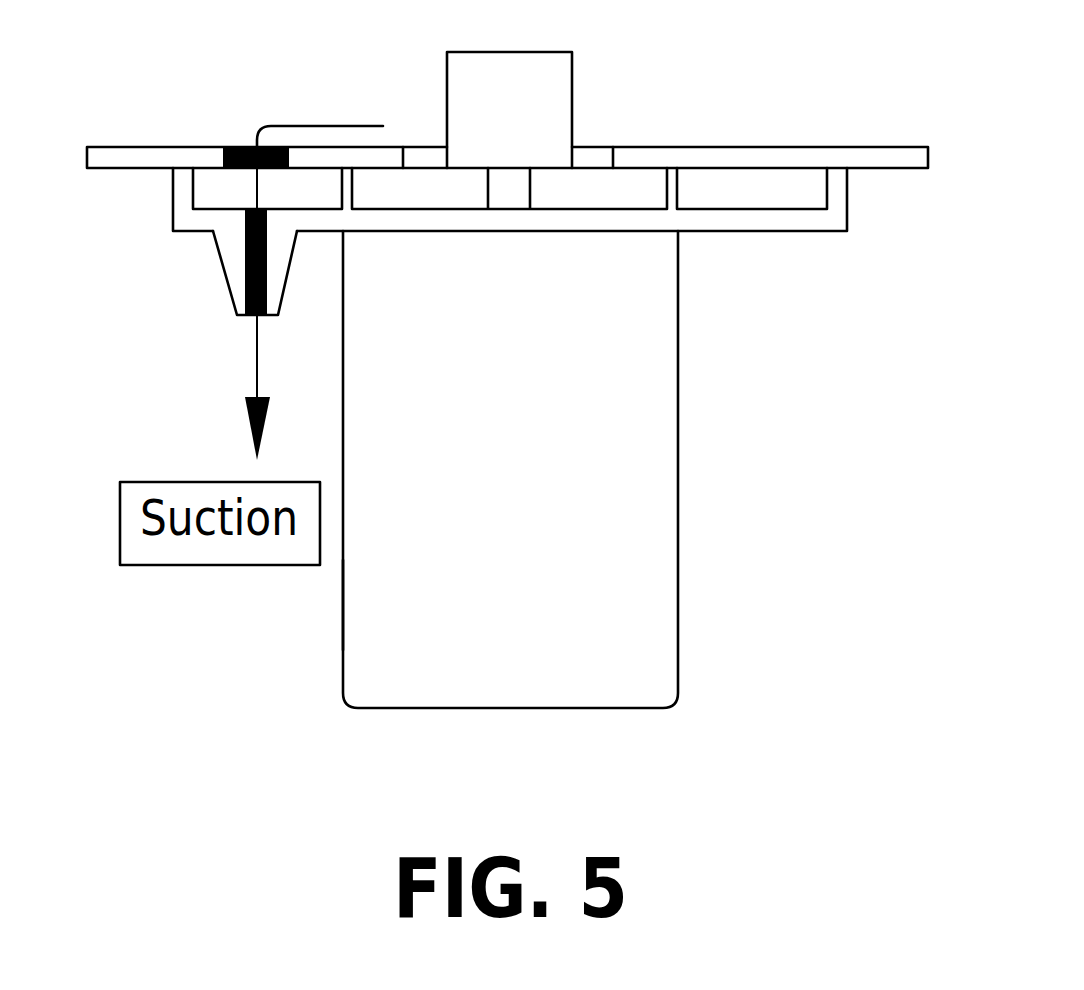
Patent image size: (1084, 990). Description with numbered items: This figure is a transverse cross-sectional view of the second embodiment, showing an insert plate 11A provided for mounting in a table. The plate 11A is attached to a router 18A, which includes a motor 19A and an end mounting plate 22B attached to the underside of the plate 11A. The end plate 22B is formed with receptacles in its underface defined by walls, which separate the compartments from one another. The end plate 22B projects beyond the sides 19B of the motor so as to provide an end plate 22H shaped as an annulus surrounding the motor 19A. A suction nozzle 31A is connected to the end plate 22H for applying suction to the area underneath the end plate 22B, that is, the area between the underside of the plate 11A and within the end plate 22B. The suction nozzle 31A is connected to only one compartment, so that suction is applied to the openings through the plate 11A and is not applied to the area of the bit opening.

The insert plate 11A is at (763, 147).
The end mounting plate 22B is at (803, 229).
The end plate 22H is at (193, 233).
The suction nozzle 31A is at (277, 252).
The router 18A is at (635, 522).
The motor 19A is at (543, 615).
The sides of the motor 19B is at (343, 605).